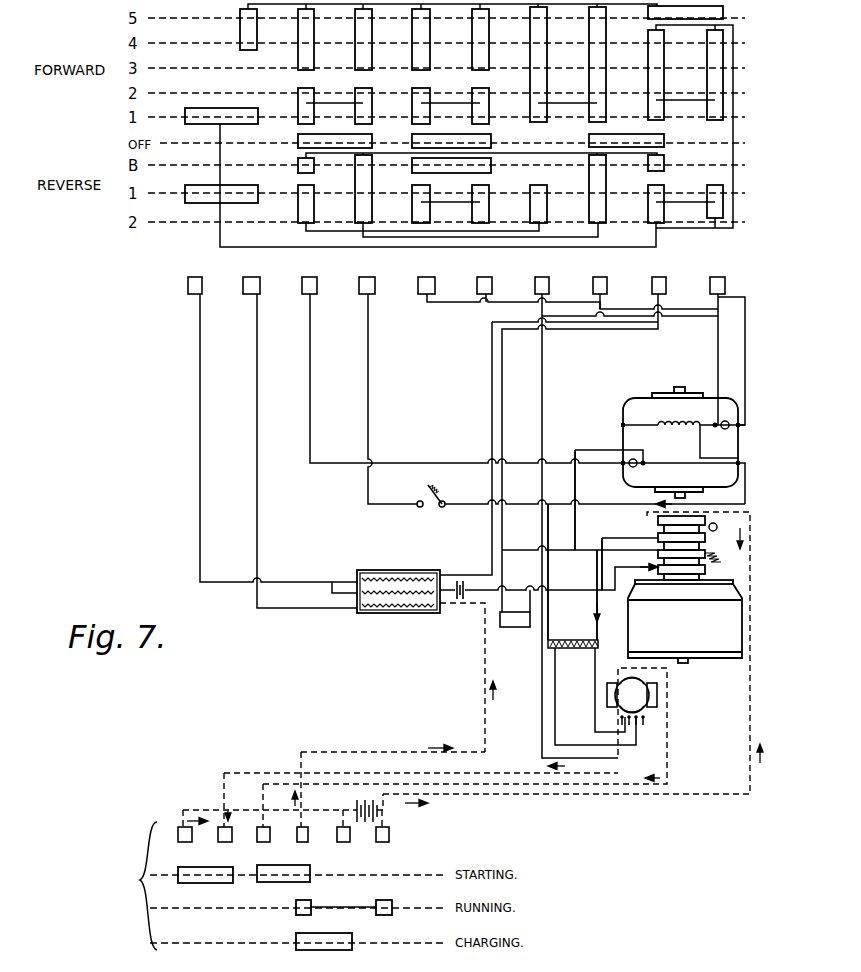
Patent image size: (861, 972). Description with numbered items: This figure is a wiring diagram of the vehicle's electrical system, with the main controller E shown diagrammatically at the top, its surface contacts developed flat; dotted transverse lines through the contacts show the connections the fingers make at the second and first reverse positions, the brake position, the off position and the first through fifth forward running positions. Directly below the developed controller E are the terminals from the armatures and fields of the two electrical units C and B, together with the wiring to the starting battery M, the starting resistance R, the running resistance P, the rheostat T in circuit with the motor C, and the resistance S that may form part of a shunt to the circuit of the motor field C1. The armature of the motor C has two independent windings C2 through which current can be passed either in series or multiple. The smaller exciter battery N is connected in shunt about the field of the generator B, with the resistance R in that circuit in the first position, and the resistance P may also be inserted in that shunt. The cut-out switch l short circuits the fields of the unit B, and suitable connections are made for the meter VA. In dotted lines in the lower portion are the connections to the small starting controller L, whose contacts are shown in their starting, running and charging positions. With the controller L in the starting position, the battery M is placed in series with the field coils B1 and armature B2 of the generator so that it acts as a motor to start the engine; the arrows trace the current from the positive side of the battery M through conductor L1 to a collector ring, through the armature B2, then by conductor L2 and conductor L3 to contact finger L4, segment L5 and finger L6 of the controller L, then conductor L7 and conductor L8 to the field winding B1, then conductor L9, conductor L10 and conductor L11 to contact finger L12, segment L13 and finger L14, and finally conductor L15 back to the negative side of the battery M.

The controller E is at (704, 126).
The rheostat T is at (437, 495).
The starting resistance R is at (360, 572).
The running resistance P is at (398, 576).
The resistance S is at (374, 612).
The exciter battery N is at (463, 600).
The cut-out switch l is at (520, 628).
The second electrical unit C is at (683, 442).
The motor field C1 is at (679, 415).
The armature windings C2 is at (666, 451).
The motor generator B is at (685, 589).
The field coils B1 is at (721, 561).
The armature B2 is at (724, 528).
The meter VA is at (657, 696).
The starting controller L is at (130, 886).
The conductor L1 is at (554, 795).
The conductor L2 is at (612, 537).
The conductor L3 is at (669, 752).
The contact finger L4 is at (265, 825).
The segment L5 is at (268, 883).
The finger L6 is at (302, 809).
The conductor L7 is at (356, 742).
The conductor L8 is at (593, 598).
The conductor L9 is at (561, 545).
The conductor L10 is at (540, 702).
The conductor L11 is at (500, 770).
The contact finger L12 is at (231, 819).
The segment L13 is at (227, 881).
The finger L14 is at (191, 846).
The conductor L15 is at (190, 808).
The starting battery M is at (378, 812).